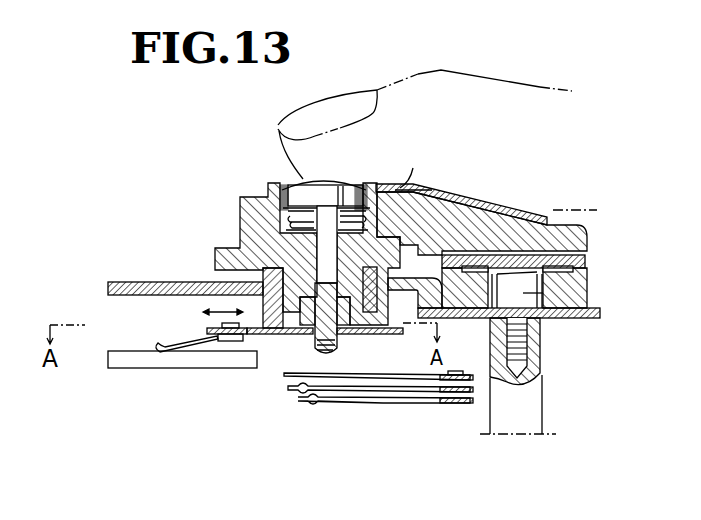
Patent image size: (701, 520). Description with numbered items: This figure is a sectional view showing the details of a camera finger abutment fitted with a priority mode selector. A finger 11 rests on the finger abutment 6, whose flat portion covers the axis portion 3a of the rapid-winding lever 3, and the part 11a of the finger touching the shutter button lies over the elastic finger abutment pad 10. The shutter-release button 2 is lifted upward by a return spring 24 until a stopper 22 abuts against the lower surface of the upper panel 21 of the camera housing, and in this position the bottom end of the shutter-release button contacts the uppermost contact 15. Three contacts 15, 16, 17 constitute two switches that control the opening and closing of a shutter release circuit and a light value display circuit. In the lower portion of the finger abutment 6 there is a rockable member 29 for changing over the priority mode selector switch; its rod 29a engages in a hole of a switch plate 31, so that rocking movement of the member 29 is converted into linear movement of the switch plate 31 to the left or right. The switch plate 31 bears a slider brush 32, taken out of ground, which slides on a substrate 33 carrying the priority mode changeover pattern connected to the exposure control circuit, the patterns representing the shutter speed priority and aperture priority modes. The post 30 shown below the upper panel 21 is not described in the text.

The shutter-release button 2 is at (300, 190).
The rapid-winding lever 3 is at (590, 291).
The axis portion of the rapid-winding lever 3a is at (590, 253).
The finger abutment 6 is at (437, 188).
The finger abutment pad 10 is at (491, 189).
The finger 11 is at (417, 74).
The part of the finger 11a is at (562, 209).
The uppermost contact 15 is at (283, 374).
The contact 16 is at (290, 389).
The contact 17 is at (312, 400).
The upper panel 21 is at (605, 318).
The stopper 22 is at (338, 300).
The return spring 24 is at (285, 197).
The rockable member 29 is at (223, 252).
The rod 29a is at (303, 334).
The post 30 is at (534, 405).
The switch plate 31 is at (208, 330).
The slider brush 32 is at (193, 346).
The substrate 33 is at (122, 355).